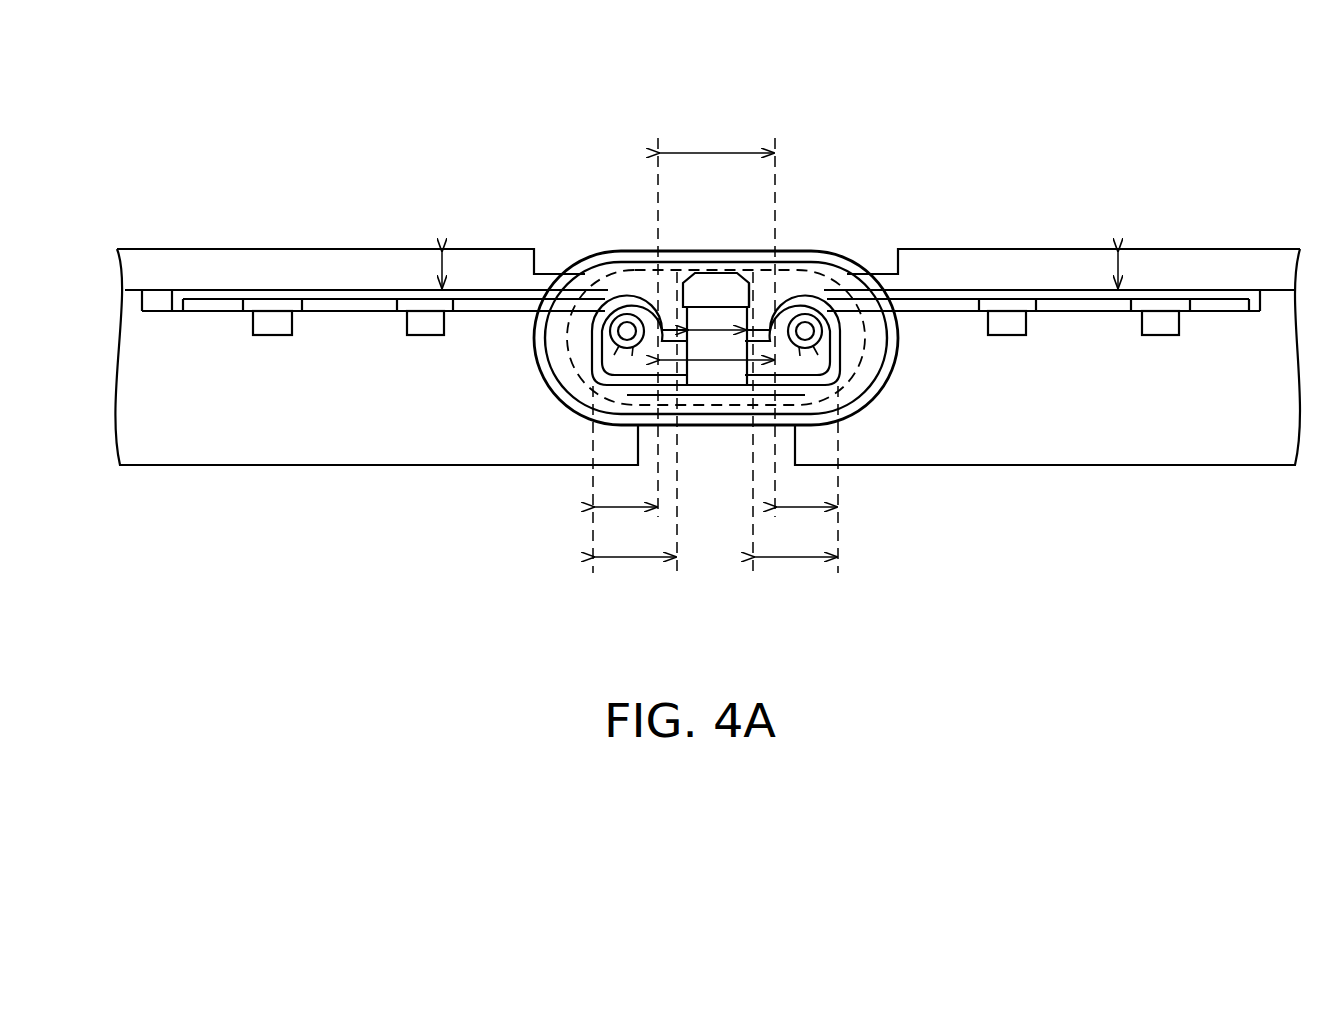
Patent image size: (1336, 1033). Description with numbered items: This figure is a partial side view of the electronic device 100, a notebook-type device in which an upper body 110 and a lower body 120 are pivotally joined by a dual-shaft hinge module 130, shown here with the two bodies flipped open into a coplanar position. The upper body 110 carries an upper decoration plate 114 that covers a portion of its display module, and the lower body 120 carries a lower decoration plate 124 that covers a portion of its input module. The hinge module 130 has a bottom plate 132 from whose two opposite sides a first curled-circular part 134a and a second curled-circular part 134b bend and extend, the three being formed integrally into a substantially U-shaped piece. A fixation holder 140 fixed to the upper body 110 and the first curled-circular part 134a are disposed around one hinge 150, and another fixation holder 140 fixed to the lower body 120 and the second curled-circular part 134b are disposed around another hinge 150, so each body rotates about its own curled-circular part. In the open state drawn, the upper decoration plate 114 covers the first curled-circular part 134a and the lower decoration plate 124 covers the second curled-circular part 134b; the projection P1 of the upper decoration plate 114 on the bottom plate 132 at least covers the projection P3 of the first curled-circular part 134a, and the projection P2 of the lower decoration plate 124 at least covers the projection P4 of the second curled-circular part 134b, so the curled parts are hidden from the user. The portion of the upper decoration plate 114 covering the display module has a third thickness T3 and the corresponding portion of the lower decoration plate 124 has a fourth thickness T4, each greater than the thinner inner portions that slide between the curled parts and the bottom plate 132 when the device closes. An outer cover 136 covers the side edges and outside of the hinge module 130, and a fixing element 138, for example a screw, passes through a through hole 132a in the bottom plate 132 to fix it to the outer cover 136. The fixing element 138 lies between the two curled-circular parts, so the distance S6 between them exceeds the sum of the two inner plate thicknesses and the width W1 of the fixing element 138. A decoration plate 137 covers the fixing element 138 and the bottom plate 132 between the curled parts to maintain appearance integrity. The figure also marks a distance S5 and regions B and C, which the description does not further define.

The electronic device 100 is at (1226, 613).
The upper body 110 is at (1058, 463).
The upper decoration plate 114 is at (1054, 260).
The lower body 120 is at (383, 452).
The lower decoration plate 124 is at (356, 258).
The dual-shaft hinge module 130 is at (684, 94).
The bottom plate 132 is at (665, 392).
The through hole 132a is at (734, 392).
The first curled-circular part 134a is at (817, 352).
The second curled-circular part 134b is at (615, 352).
The outer cover 136 is at (620, 262).
The decoration plate 137 is at (700, 283).
The fixing element 138 is at (755, 305).
The fixation holder 140 is at (498, 305).
The hinge 150 is at (627, 331).
The third thickness T3 is at (1122, 272).
The fourth thickness T4 is at (440, 270).
The spacing between spring portions S5 is at (712, 362).
The distance between first and second curled-circular parts S6 is at (716, 316).
The width of fixing element W1 is at (716, 330).
The projection of upper decoration plate P1 is at (795, 540).
The projection of lower decoration plate P2 is at (635, 540).
The projection of first curled-circular part P3 is at (806, 488).
The projection of second curled-circular part P4 is at (715, 479).
The region B is at (558, 392).
The region C is at (874, 392).